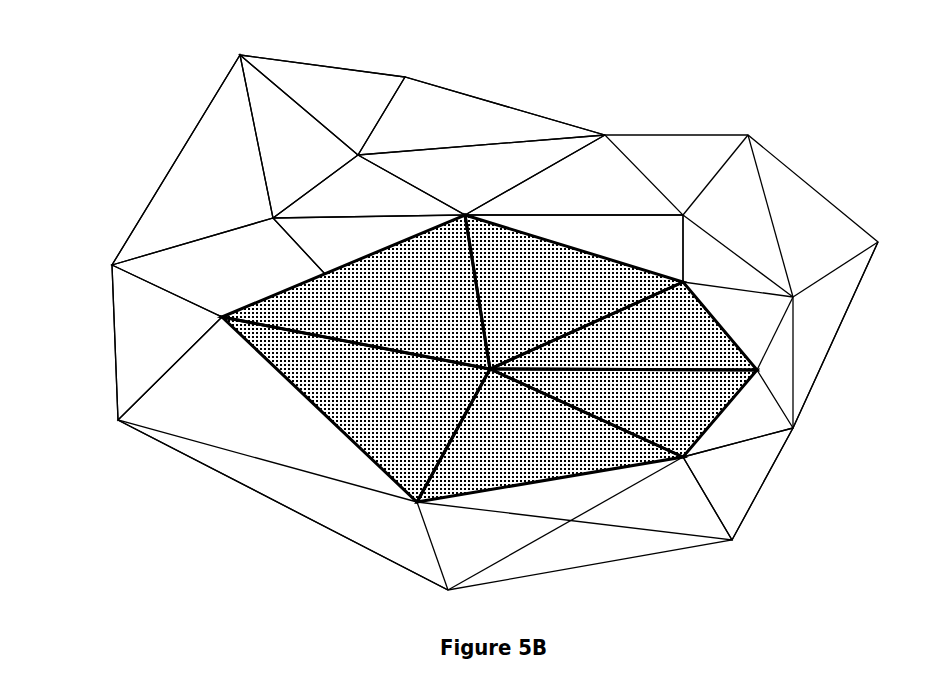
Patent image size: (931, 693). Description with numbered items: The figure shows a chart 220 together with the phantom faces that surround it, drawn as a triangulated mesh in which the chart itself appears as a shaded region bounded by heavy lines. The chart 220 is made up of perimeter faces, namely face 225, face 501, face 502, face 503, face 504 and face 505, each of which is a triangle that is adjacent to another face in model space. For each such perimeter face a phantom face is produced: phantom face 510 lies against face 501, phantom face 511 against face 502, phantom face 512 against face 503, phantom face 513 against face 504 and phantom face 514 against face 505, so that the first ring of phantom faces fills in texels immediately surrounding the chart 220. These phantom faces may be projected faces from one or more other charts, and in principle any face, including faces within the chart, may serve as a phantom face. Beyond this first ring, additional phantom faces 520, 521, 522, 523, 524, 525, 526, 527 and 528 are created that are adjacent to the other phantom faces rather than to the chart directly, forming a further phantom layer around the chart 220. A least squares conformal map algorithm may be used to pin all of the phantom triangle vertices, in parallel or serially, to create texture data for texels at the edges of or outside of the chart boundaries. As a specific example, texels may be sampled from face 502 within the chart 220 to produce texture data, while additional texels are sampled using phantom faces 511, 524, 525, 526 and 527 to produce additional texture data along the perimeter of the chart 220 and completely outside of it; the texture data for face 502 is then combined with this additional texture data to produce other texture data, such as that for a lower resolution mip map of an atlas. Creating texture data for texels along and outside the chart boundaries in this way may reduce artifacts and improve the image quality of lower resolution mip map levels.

The chart 220 is at (273, 219).
The perimeter face 225 is at (644, 358).
The perimeter face 501 is at (523, 306).
The perimeter face 502 is at (388, 306).
The perimeter face 503 is at (383, 410).
The perimeter face 504 is at (508, 450).
The perimeter face 505 is at (646, 420).
The phantom face 510 is at (621, 250).
The phantom face 511 is at (306, 252).
The phantom face 512 is at (208, 412).
The phantom face 513 is at (528, 510).
The phantom face 514 is at (734, 426).
The additional phantom face 520 is at (576, 198).
The additional phantom face 521 is at (443, 186).
The additional phantom face 522 is at (418, 130).
The additional phantom face 523 is at (330, 108).
The additional phantom face 524 is at (282, 160).
The additional phantom face 525 is at (343, 206).
The additional phantom face 526 is at (201, 196).
The additional phantom face 527 is at (192, 274).
The additional phantom face 528 is at (138, 340).